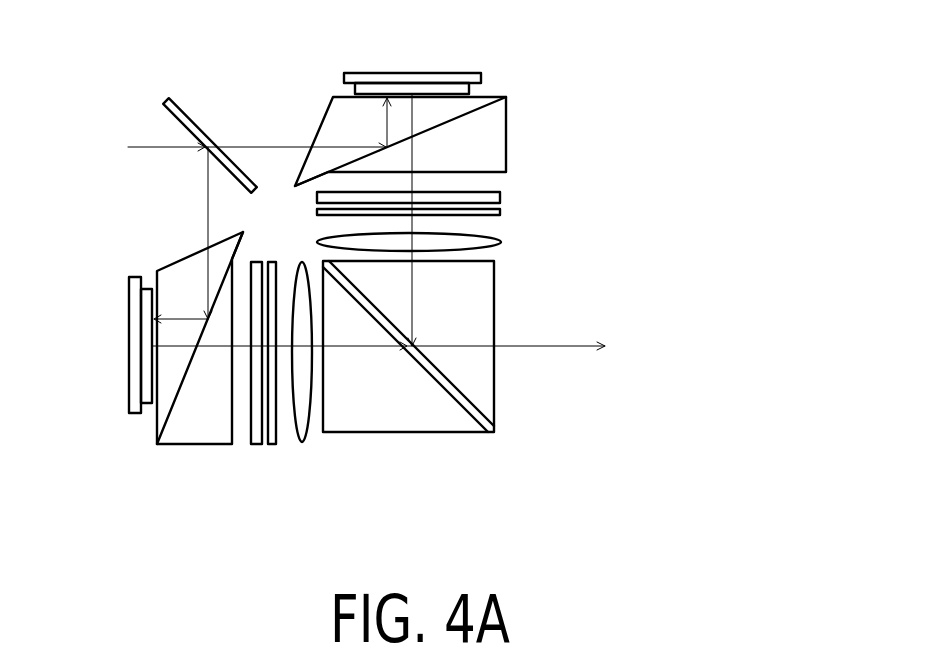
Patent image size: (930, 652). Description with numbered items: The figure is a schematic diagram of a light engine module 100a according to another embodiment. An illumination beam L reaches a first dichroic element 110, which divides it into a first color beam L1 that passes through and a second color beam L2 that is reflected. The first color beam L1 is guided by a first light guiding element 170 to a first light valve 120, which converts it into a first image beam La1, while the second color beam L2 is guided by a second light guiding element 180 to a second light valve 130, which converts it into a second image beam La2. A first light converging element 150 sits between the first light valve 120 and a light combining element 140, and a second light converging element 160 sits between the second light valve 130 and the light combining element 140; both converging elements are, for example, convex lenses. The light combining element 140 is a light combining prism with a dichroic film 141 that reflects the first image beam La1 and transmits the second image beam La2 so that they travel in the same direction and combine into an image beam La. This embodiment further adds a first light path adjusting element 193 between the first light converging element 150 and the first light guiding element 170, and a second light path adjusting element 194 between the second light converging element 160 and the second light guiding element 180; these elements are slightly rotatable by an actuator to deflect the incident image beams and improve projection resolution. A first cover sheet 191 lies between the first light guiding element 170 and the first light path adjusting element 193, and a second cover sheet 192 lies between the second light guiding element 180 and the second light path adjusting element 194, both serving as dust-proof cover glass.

The light engine module 100a is at (86, 81).
The first dichroic element 110 is at (182, 108).
The first light valve 120 is at (436, 78).
The second light valve 130 is at (135, 392).
The light combining element 140 is at (428, 440).
The dichroic film 141 is at (488, 427).
The first light converging element 150 is at (500, 242).
The second light converging element 160 is at (304, 443).
The first light guiding element 170 is at (520, 131).
The second light guiding element 180 is at (190, 458).
The first cover sheet 191 is at (500, 197).
The second cover sheet 192 is at (256, 446).
The first light path adjusting element 193 is at (500, 212).
The second light path adjusting element 194 is at (270, 446).
The illumination beam L is at (142, 147).
The first color beam L1 is at (258, 147).
The second color beam L2 is at (208, 192).
The image beam La is at (541, 348).
The first image beam La1 is at (412, 282).
The second image beam La2 is at (363, 348).